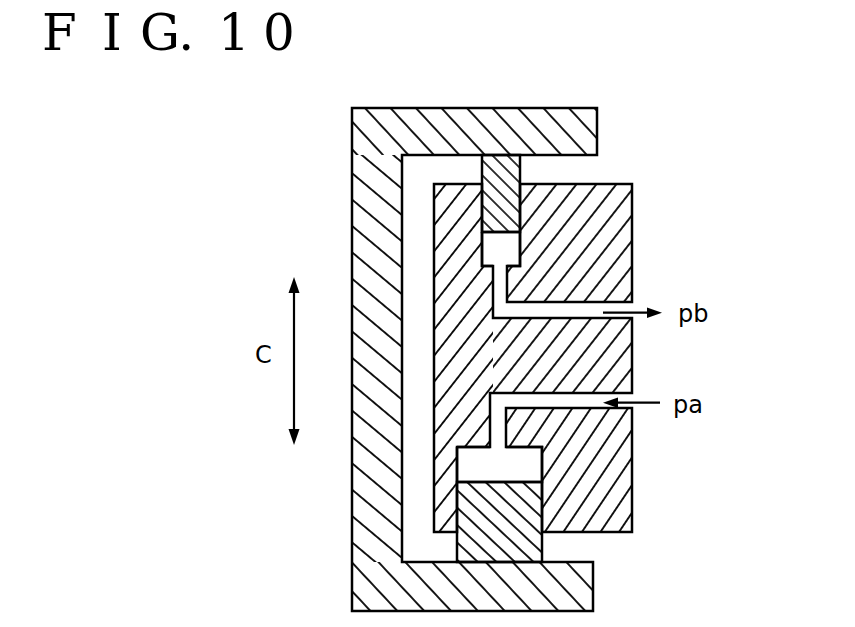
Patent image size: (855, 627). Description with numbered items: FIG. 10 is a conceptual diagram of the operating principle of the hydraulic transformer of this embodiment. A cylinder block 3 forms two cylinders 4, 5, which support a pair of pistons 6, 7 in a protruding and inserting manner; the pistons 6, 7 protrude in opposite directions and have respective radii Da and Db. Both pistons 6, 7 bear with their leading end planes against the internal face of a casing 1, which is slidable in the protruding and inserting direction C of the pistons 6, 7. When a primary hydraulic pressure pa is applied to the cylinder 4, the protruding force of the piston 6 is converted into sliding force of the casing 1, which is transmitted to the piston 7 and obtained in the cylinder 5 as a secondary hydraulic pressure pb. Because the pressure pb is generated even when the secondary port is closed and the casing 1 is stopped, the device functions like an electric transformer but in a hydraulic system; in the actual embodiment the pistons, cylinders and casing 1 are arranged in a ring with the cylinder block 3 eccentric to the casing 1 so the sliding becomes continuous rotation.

The casing 1 is at (365, 515).
The cylinder block 3 is at (632, 195).
The cylinder 4 is at (515, 468).
The cylinder 5 is at (500, 250).
The piston 6 is at (532, 544).
The piston 7 is at (512, 172).